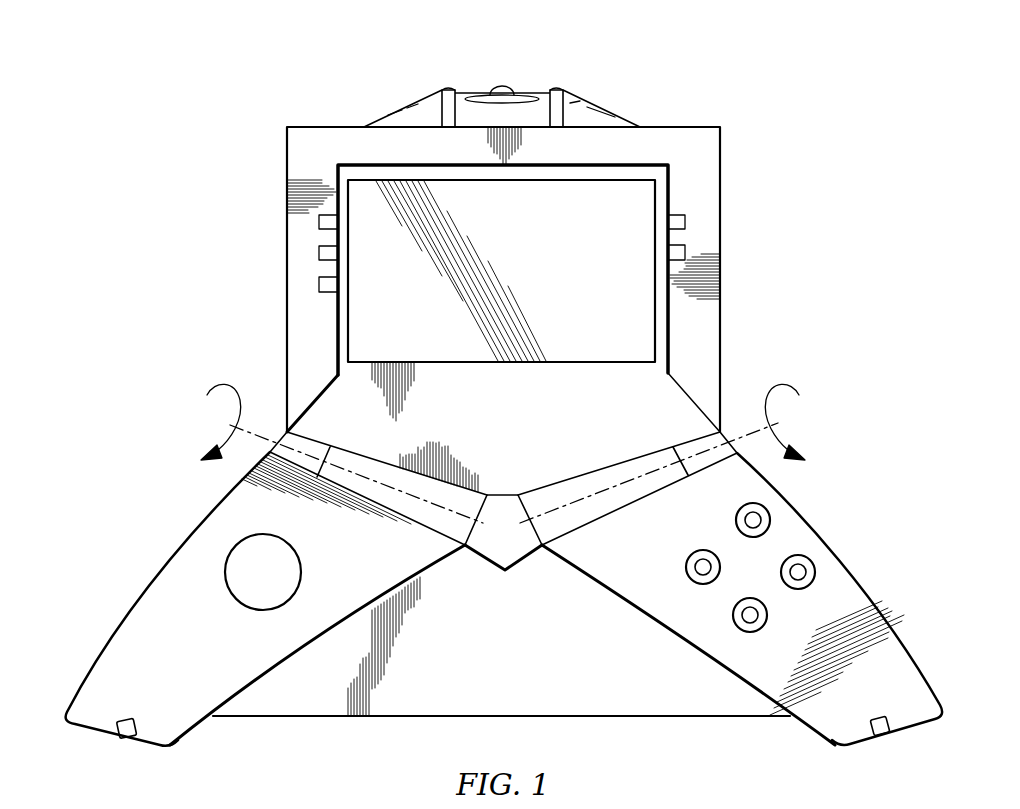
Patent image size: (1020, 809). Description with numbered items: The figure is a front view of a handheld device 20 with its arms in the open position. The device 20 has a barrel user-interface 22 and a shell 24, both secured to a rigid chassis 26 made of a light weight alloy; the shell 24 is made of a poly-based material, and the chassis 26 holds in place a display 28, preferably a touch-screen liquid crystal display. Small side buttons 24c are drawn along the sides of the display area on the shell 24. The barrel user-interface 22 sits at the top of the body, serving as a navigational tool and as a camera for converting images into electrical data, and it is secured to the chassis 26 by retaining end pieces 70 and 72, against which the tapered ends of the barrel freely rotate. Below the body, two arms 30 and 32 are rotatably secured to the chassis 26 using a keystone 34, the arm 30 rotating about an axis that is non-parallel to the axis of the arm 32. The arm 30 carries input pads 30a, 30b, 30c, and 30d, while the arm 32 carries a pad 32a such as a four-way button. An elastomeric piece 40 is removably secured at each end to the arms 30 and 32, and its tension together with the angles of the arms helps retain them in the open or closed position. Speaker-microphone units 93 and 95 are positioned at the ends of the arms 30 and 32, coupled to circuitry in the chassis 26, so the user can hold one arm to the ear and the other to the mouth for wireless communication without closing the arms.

The device 20 is at (686, 74).
The barrel user-interface 22 is at (474, 96).
The shell 24 is at (721, 164).
The side control buttons 24c is at (319, 253).
The chassis 26 is at (663, 313).
The display 28 is at (570, 347).
The arm 30 is at (844, 557).
The input pad 30a is at (698, 550).
The input pad 30b is at (758, 537).
The input pad 30c is at (733, 615).
The input pad 30d is at (800, 589).
The arm 32 is at (163, 561).
The pad 32a is at (240, 584).
The keystone 34 is at (490, 557).
The elastomeric piece 40 is at (516, 658).
The retaining end piece 70 is at (418, 107).
The retaining end piece 72 is at (585, 107).
The speaker-microphone unit 93 is at (885, 738).
The speaker-microphone unit 95 is at (123, 740).